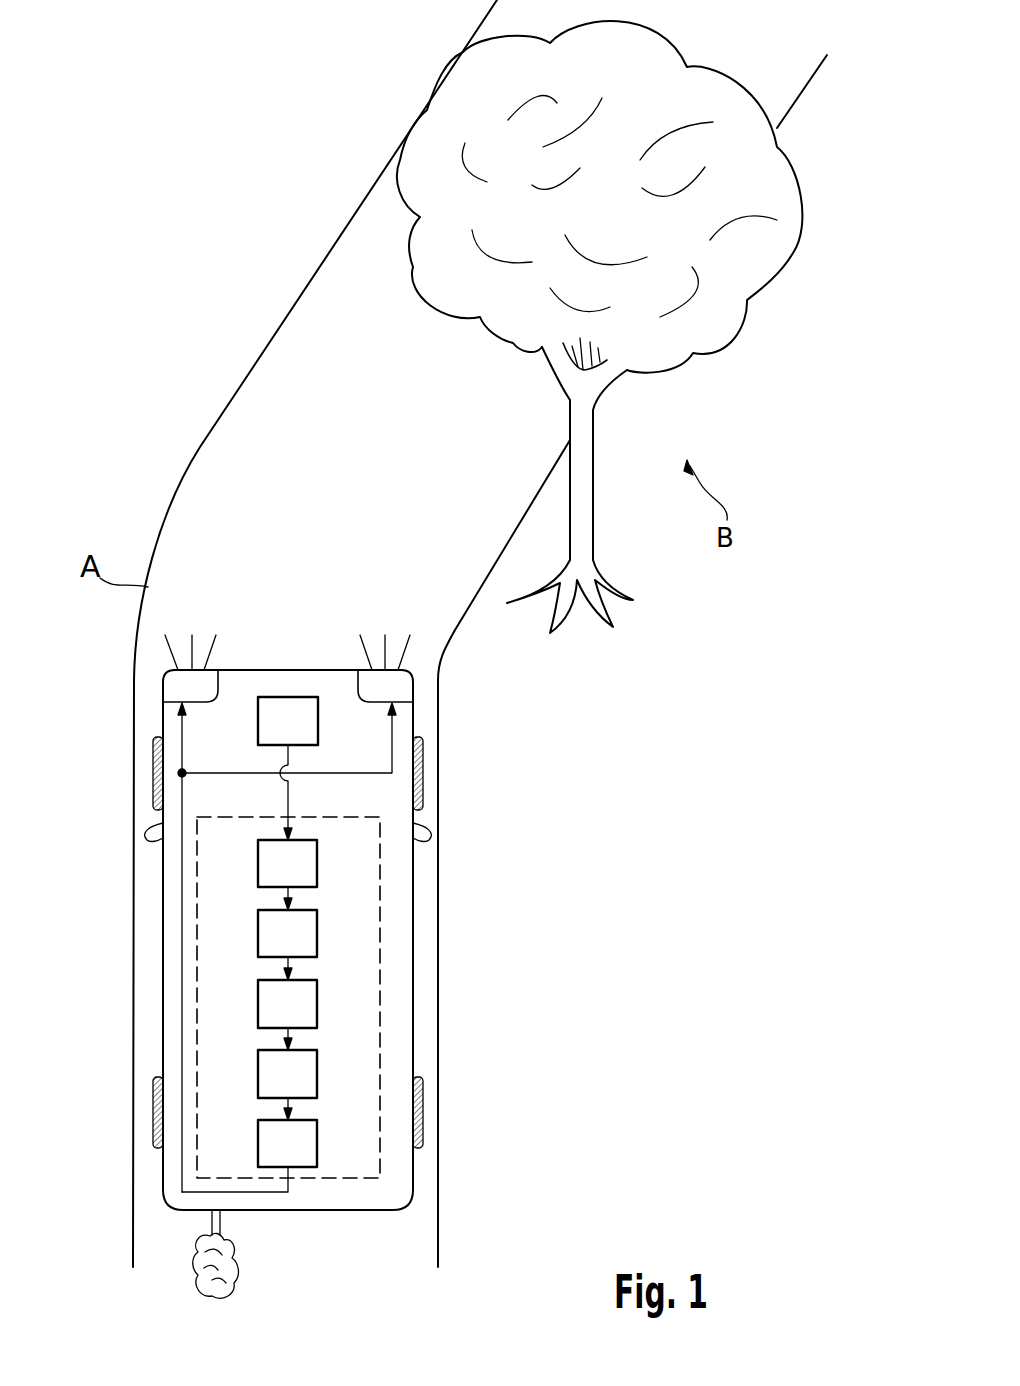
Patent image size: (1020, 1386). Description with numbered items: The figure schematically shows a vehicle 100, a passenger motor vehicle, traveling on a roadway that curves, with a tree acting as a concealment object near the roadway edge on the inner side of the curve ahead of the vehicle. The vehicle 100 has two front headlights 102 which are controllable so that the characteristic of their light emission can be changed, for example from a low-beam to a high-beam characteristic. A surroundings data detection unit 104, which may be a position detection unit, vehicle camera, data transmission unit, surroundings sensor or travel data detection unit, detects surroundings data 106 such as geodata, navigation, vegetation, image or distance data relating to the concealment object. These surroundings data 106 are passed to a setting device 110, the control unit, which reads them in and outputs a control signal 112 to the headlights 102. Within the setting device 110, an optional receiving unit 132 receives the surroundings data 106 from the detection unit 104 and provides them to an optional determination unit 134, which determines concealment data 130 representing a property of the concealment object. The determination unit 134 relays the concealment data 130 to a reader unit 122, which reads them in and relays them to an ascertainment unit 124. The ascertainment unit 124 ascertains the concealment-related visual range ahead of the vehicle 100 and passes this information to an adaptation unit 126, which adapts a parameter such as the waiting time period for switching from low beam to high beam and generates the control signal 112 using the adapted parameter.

The vehicle 100 is at (163, 1015).
The headlights 102 is at (165, 686).
The surroundings data detection unit 104 is at (288, 697).
The surroundings data 106 is at (288, 797).
The setting device 110 is at (327, 1180).
The control signal 112 is at (182, 905).
The reader unit 122 is at (318, 1003).
The ascertainment unit 124 is at (318, 1072).
The adaptation unit 126 is at (318, 1143).
The concealment data 130 is at (260, 962).
The receiving unit 132 is at (318, 862).
The determination unit 134 is at (318, 933).